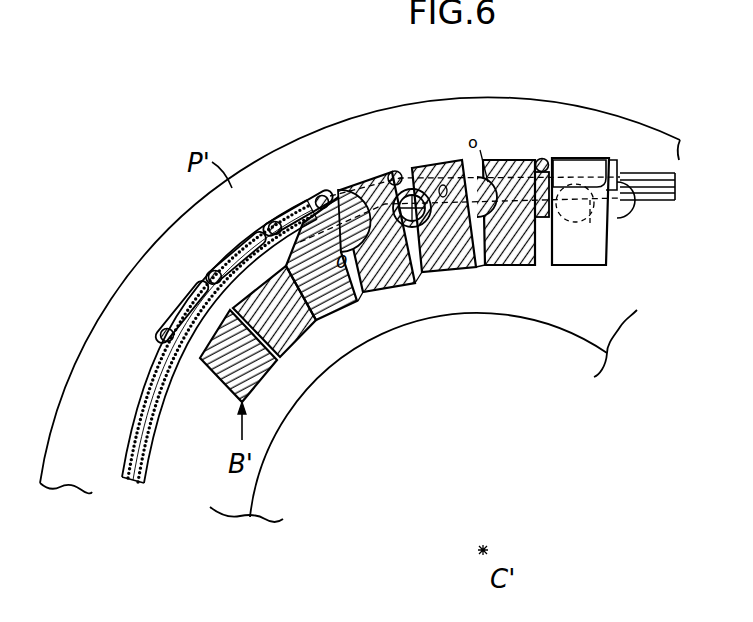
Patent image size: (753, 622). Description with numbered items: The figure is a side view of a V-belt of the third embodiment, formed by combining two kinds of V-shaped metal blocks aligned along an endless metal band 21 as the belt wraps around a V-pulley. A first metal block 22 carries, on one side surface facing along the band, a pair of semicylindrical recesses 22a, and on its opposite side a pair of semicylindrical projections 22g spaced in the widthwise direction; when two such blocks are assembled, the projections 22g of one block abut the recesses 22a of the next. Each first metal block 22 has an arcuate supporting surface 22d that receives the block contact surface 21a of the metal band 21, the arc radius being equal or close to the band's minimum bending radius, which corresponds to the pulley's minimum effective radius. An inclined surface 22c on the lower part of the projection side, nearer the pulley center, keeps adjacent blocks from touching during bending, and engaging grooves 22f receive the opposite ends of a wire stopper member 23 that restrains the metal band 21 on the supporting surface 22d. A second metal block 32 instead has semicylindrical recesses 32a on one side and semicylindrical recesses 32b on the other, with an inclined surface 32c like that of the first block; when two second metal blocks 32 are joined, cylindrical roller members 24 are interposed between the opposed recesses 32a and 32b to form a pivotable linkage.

The metal band 21 is at (143, 412).
The block contact surface 21a is at (147, 460).
The first metal block 22 is at (435, 172).
The semicylindrical recess 22a is at (491, 212).
The inclined surface 22c is at (478, 268).
The supporting surface 22d is at (580, 211).
The engaging groove 22f is at (618, 162).
The semicylindrical projection 22g is at (338, 190).
The stopper member 23 is at (396, 171).
The cylindrical roller member 24 is at (431, 212).
The second metal block 32 is at (385, 284).
The semicylindrical recess 32a is at (355, 215).
The semicylindrical recess 32b is at (377, 232).
The inclined surface 32c is at (413, 272).